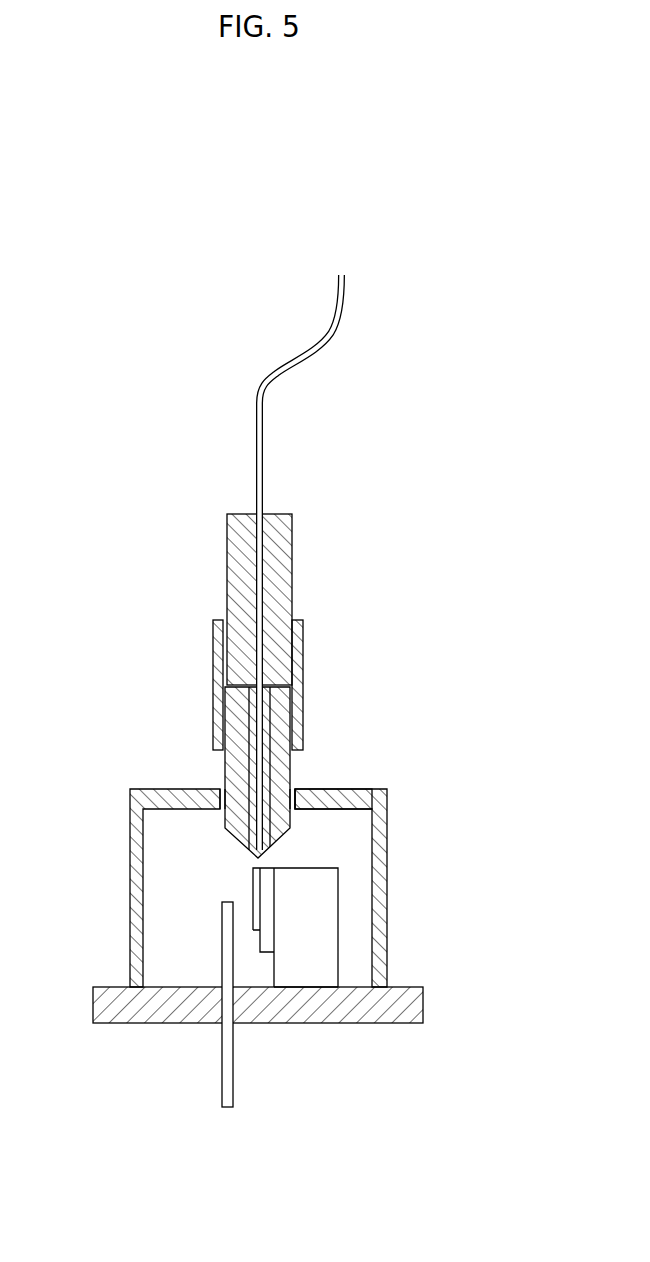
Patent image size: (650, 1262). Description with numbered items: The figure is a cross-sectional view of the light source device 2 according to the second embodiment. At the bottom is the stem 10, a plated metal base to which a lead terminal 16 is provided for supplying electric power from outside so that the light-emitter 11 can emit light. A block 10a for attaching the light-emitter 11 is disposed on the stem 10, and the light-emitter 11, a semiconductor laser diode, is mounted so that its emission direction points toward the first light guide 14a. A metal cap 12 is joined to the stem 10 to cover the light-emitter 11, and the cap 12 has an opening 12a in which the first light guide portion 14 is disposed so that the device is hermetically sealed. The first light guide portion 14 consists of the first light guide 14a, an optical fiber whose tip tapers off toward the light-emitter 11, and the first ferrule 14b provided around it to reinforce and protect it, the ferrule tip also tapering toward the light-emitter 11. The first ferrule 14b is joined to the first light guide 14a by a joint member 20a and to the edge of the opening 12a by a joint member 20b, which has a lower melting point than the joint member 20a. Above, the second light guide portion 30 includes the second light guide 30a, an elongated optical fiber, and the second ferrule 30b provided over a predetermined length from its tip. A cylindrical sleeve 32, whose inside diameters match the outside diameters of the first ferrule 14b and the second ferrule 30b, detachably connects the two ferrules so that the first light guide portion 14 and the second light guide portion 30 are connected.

The light source device 2 is at (472, 493).
The stem 10 is at (297, 1011).
The block 10a is at (306, 1027).
The light-emitter 11 is at (350, 927).
The cap 12 is at (288, 888).
The opening 12a is at (341, 776).
The first light guide portion 14 is at (59, 663).
The first light guide 14a is at (165, 768).
The first ferrule 14b is at (175, 765).
The lead terminal 16 is at (166, 1004).
The joint member 20a is at (144, 778).
The joint member 20b is at (376, 804).
The second light guide portion 30 is at (108, 380).
The second light guide 30a is at (227, 562).
The second ferrule 30b is at (202, 577).
The sleeve 32 is at (208, 671).